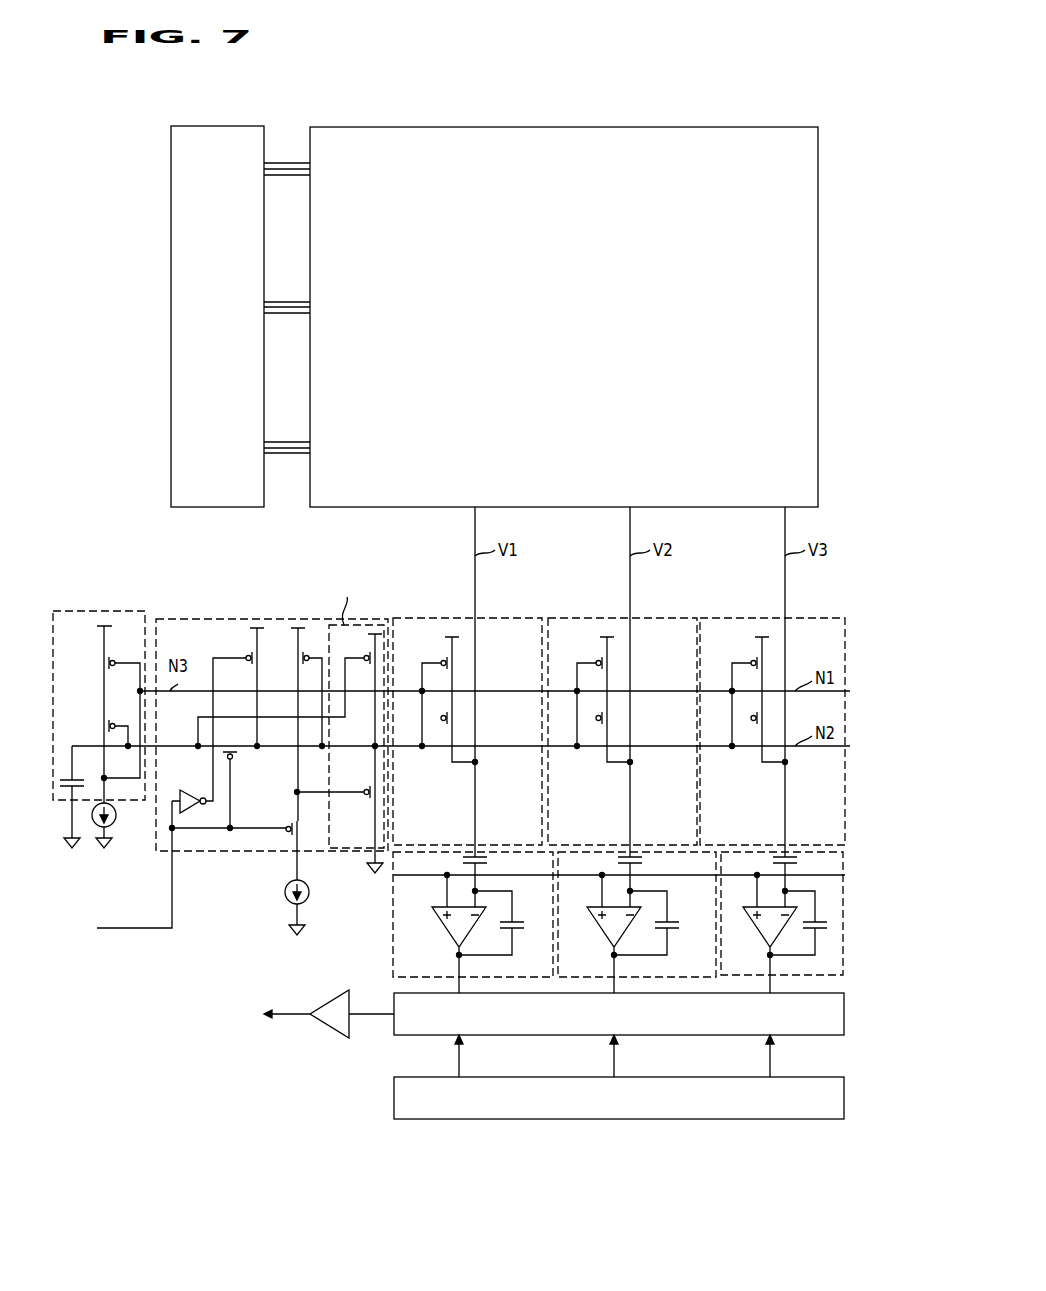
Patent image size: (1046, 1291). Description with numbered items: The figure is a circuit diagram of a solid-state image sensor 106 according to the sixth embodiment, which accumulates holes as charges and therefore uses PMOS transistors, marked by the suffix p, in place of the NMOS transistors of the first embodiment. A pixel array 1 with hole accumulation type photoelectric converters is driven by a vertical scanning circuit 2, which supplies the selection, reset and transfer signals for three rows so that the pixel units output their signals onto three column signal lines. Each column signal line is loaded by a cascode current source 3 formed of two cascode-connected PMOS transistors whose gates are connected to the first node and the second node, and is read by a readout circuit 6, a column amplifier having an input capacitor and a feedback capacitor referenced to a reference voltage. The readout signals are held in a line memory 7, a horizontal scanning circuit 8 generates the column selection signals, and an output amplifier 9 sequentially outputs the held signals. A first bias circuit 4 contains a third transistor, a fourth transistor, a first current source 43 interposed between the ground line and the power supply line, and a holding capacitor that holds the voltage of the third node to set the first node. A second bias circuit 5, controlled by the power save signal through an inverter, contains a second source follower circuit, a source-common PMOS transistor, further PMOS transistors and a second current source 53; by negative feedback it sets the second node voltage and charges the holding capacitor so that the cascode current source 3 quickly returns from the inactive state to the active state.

The pixel array 1 is at (680, 127).
The vertical scanning circuit 2 is at (233, 507).
The cascode current source 3 is at (505, 618).
The first bias circuit 4 is at (101, 717).
The second bias circuit 5 is at (249, 755).
The readout circuit 6 is at (393, 930).
The line memory 7 is at (394, 1004).
The horizontal scanning circuit 8 is at (394, 1088).
The output amplifier 9 is at (345, 994).
The first current source 43 is at (116, 815).
The second current source 53 is at (308, 887).
The solid-state image sensor 106 is at (430, 1187).